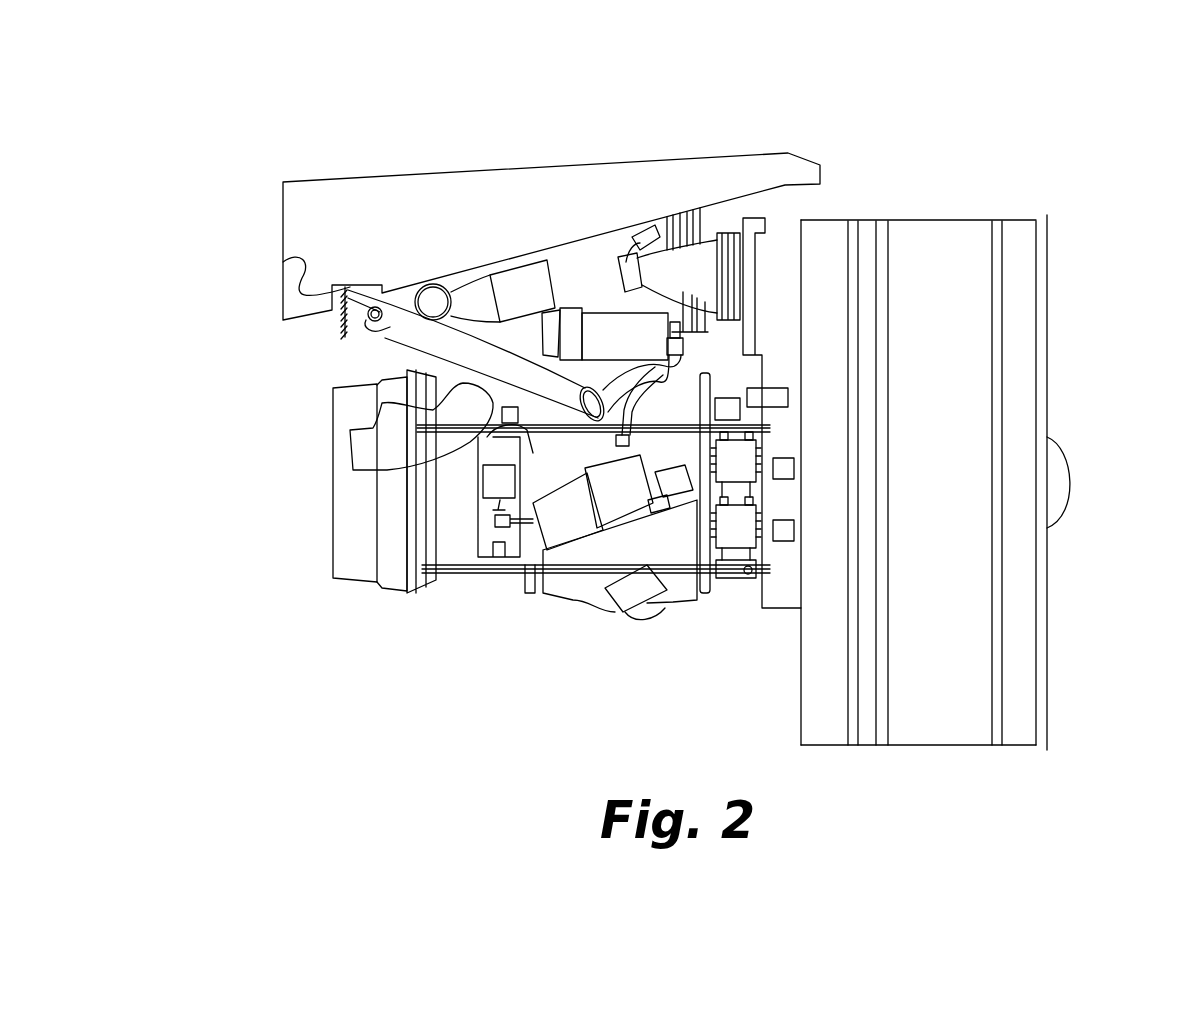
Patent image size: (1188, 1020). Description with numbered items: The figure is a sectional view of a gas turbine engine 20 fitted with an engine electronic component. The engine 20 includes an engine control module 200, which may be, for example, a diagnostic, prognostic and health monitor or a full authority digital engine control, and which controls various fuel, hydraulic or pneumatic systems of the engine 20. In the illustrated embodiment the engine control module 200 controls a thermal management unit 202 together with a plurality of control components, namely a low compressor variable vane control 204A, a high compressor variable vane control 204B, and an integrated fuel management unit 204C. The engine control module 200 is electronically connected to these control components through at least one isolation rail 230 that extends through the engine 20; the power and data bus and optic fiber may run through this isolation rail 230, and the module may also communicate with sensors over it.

The engine 20 is at (896, 122).
The engine control module 200 is at (750, 468).
The thermal management unit 202 is at (735, 412).
The low compressor variable vane control 204A is at (780, 393).
The high compressor variable vane control 204B is at (287, 293).
The integrated fuel management unit 204C is at (622, 600).
The isolation rail 230 is at (402, 424).